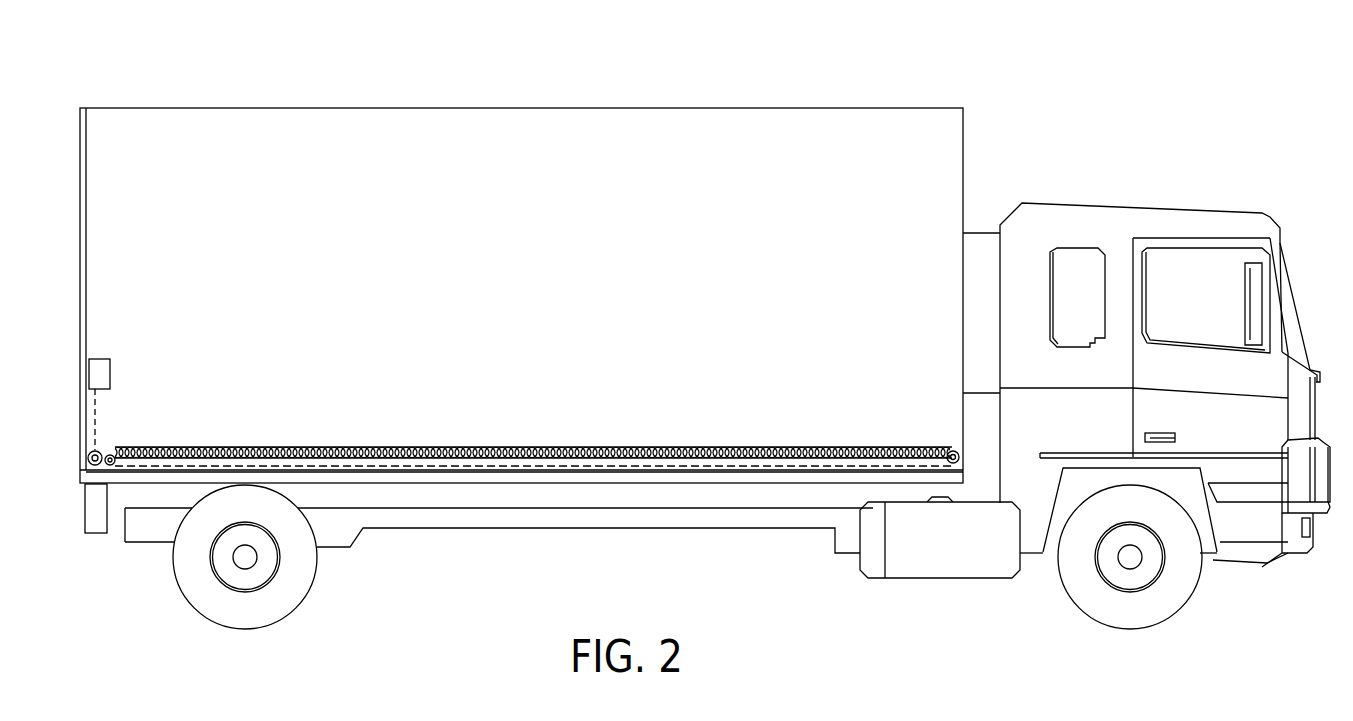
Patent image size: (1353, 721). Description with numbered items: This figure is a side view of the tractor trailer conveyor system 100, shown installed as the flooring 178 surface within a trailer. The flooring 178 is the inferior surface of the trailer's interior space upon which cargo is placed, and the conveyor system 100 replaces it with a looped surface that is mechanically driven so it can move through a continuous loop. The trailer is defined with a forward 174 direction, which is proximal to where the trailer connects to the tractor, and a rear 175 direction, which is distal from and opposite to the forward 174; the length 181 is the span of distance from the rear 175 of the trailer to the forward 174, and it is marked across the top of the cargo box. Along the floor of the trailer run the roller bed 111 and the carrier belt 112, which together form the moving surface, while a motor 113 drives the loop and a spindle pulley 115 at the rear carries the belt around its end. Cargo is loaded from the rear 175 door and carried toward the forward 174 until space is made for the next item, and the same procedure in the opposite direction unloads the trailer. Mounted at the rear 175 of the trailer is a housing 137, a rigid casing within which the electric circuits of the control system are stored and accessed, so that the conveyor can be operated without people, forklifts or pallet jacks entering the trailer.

The tractor trailer conveyor system 100 is at (703, 280).
The roller bed 111 is at (240, 447).
The carrier belt 112 is at (385, 447).
The motor 113 is at (112, 467).
The spindle pulley 115 is at (82, 472).
The housing 137 is at (110, 372).
The forward direction 174 is at (915, 253).
The rear direction 175 is at (120, 213).
The flooring 178 is at (612, 422).
The length 181 is at (963, 100).